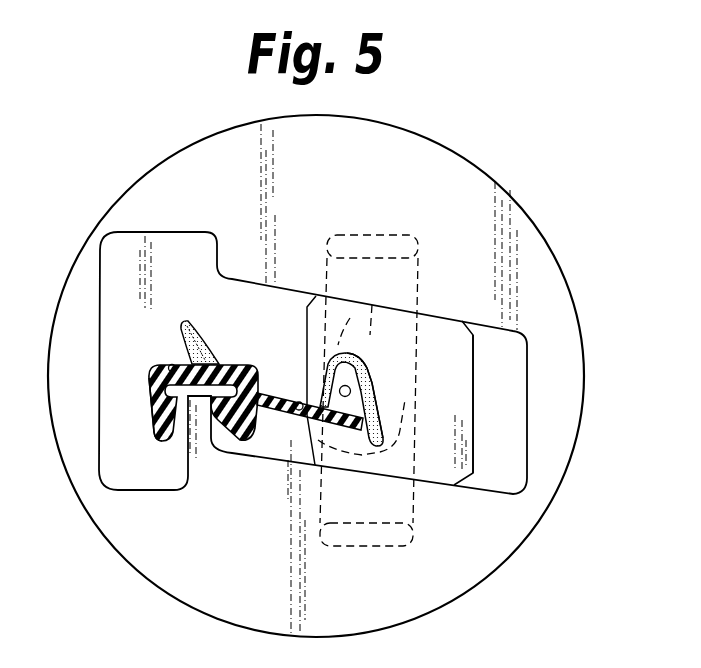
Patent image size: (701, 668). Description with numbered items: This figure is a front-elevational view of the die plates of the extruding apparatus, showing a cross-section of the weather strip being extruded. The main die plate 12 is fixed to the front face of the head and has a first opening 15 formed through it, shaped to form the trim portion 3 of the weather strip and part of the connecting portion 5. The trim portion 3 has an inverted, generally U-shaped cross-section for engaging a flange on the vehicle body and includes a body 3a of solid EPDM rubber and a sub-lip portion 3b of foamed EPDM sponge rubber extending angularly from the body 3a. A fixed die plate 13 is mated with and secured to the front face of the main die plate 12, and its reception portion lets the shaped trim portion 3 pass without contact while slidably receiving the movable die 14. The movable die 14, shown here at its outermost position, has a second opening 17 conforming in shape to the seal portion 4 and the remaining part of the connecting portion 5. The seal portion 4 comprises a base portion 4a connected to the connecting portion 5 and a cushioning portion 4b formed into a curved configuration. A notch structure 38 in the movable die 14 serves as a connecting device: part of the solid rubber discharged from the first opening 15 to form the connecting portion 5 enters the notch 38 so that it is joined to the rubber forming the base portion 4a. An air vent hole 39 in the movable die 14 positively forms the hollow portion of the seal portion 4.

The trim portion 3 is at (251, 362).
The body 3a is at (151, 398).
The sub-lip portion 3b is at (199, 330).
The seal portion 4 is at (375, 391).
The base portion 4a is at (337, 434).
The cushioning portion 4b is at (374, 379).
The connecting portion 5 is at (283, 424).
The main die plate 12 is at (117, 288).
The fixed die plate 13 is at (563, 268).
The movable die 14 is at (473, 408).
The first opening 15 is at (171, 365).
The second opening 17 is at (374, 363).
The notch structure 38 is at (297, 403).
The air vent hole 39 is at (351, 392).